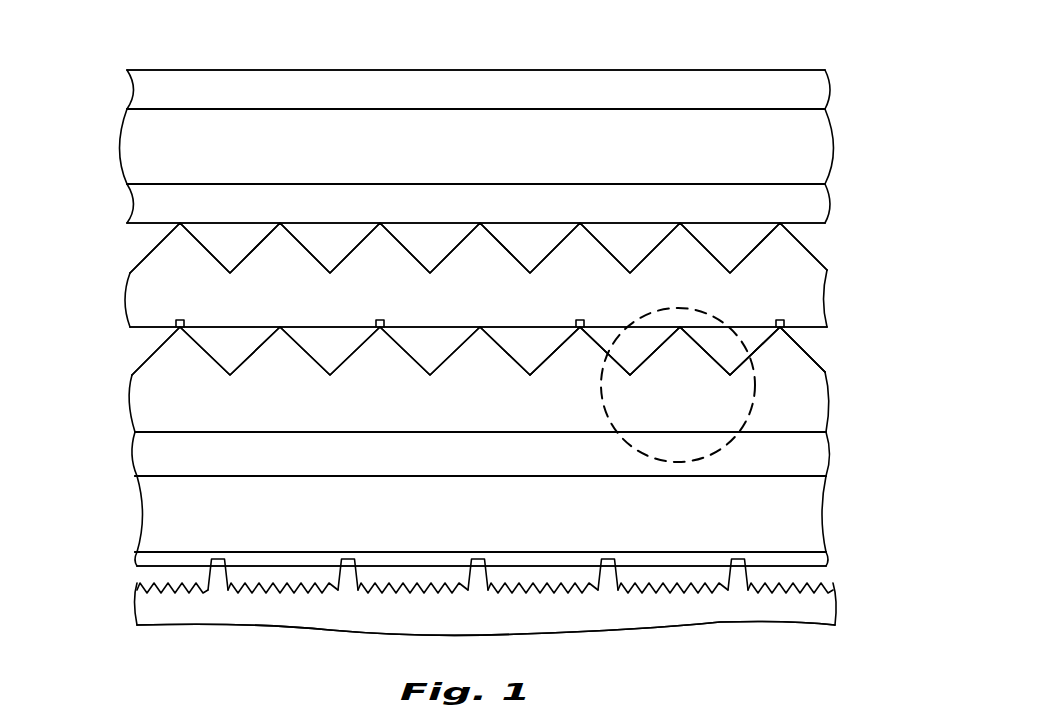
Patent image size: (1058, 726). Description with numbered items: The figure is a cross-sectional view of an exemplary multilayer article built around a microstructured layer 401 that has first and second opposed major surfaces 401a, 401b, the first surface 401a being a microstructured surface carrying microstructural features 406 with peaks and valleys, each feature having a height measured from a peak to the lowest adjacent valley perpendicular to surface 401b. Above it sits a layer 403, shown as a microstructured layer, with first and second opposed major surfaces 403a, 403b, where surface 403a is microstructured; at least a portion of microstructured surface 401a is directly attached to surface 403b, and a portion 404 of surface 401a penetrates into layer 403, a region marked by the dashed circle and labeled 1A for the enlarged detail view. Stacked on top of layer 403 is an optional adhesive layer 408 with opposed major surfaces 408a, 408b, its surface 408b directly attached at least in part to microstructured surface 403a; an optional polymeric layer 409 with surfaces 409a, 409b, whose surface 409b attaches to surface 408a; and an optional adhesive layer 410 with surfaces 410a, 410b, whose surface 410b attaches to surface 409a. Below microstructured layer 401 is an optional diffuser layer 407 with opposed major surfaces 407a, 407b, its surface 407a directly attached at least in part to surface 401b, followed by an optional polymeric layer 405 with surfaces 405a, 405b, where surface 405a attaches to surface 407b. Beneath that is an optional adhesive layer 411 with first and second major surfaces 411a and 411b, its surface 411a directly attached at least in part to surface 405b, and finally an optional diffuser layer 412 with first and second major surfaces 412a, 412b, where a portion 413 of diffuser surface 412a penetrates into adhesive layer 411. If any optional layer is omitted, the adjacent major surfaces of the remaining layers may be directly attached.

The microstructured layer 401 is at (148, 408).
The first major surface of microstructured layer 401a is at (140, 363).
The second major surface of microstructured layer 401b is at (203, 433).
The microstructured layer 403 is at (147, 294).
The first major surface of layer 403 403a is at (148, 253).
The second major surface of layer 403 403b is at (140, 335).
The portion of microstructured surface 404 is at (783, 324).
The optional polymeric layer 405 is at (148, 518).
The first major surface of polymeric layer 405a is at (790, 476).
The second major surface of polymeric layer 405b is at (808, 553).
The microstructural features 406 is at (677, 357).
The optional diffuser layer 407 is at (150, 460).
The first major surface of diffuser layer 407a is at (790, 433).
The second major surface of diffuser layer 407b is at (767, 477).
The optional adhesive layer 408 is at (143, 208).
The first major surface of adhesive layer 408 408a is at (813, 184).
The second major surface of adhesive layer 408 408b is at (823, 227).
The optional polymeric layer 409 is at (130, 152).
The first major surface of polymeric layer 409 409a is at (777, 108).
The second major surface of polymeric layer 409 409b is at (700, 186).
The optional adhesive layer 410 is at (140, 92).
The first major surface of adhesive layer 410 410a is at (183, 70).
The second major surface of adhesive layer 410 410b is at (258, 110).
The optional adhesive layer 411 is at (140, 562).
The first major surface of adhesive layer 411 411a is at (790, 552).
The second major surface of adhesive layer 411 411b is at (805, 570).
The optional diffuser layer 412 is at (484, 619).
The first major surface of diffuser layer 412 412a is at (665, 580).
The second major surface of diffuser layer 412 412b is at (822, 625).
The portion of diffuser surface 413 is at (738, 575).
The detail view region 1A is at (668, 470).